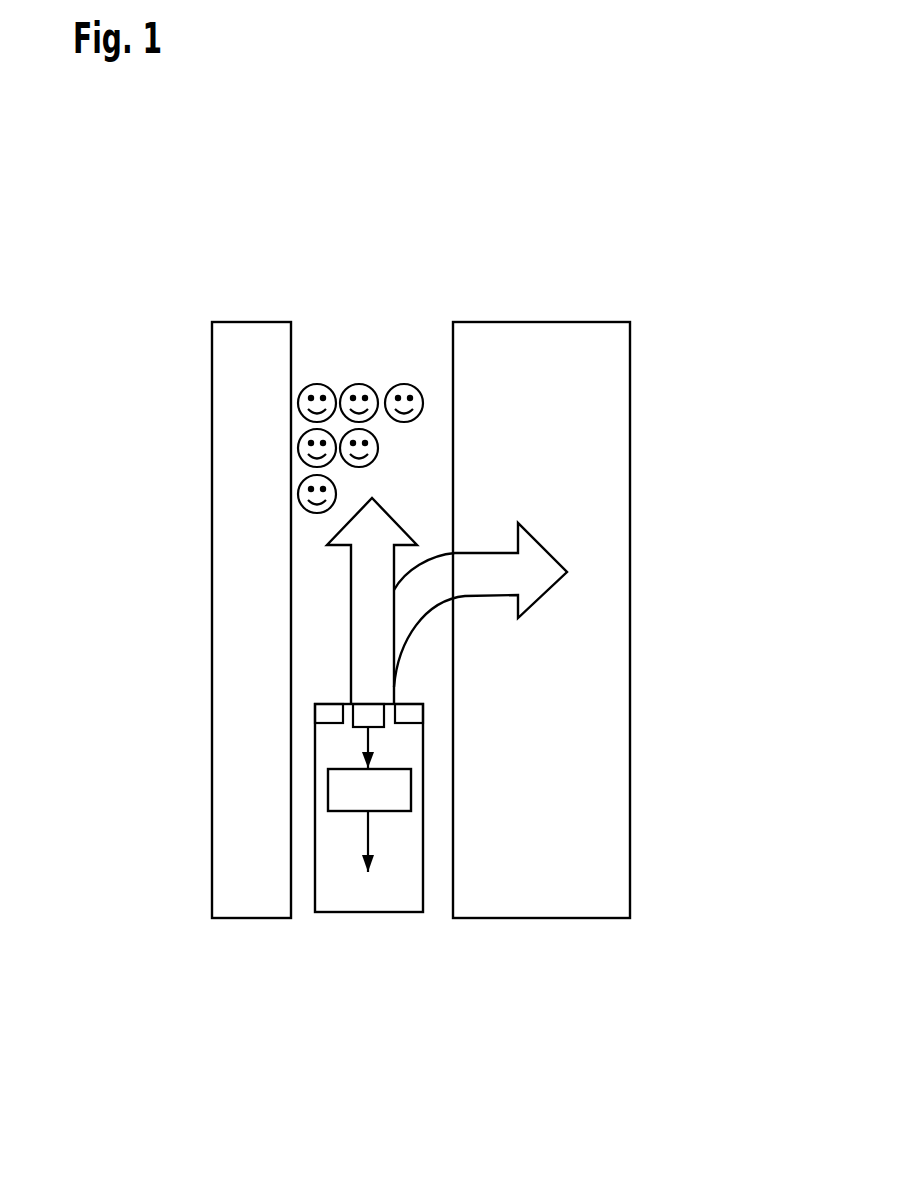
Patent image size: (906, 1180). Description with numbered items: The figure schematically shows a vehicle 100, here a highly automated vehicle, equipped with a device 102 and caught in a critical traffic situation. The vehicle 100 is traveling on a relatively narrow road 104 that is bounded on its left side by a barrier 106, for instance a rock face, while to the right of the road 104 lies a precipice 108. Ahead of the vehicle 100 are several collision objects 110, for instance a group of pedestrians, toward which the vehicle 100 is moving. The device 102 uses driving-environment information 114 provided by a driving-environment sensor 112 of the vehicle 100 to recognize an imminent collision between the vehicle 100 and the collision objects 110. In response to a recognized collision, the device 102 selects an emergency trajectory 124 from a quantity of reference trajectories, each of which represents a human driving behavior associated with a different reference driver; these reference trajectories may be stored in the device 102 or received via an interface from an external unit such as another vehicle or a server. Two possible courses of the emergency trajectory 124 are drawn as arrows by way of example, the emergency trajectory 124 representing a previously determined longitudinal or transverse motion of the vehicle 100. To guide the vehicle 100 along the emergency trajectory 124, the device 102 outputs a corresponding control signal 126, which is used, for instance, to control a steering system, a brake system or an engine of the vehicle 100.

The vehicle 100 is at (368, 912).
The device 102 is at (345, 790).
The road 104 is at (427, 302).
The barrier 106 is at (211, 450).
The precipice 108 is at (630, 467).
The collision objects 110 is at (404, 384).
The driving-environment sensor 112 is at (362, 722).
The driving-environment information 114 is at (368, 735).
The emergency trajectory 124 is at (488, 570).
The control signal 126 is at (368, 833).